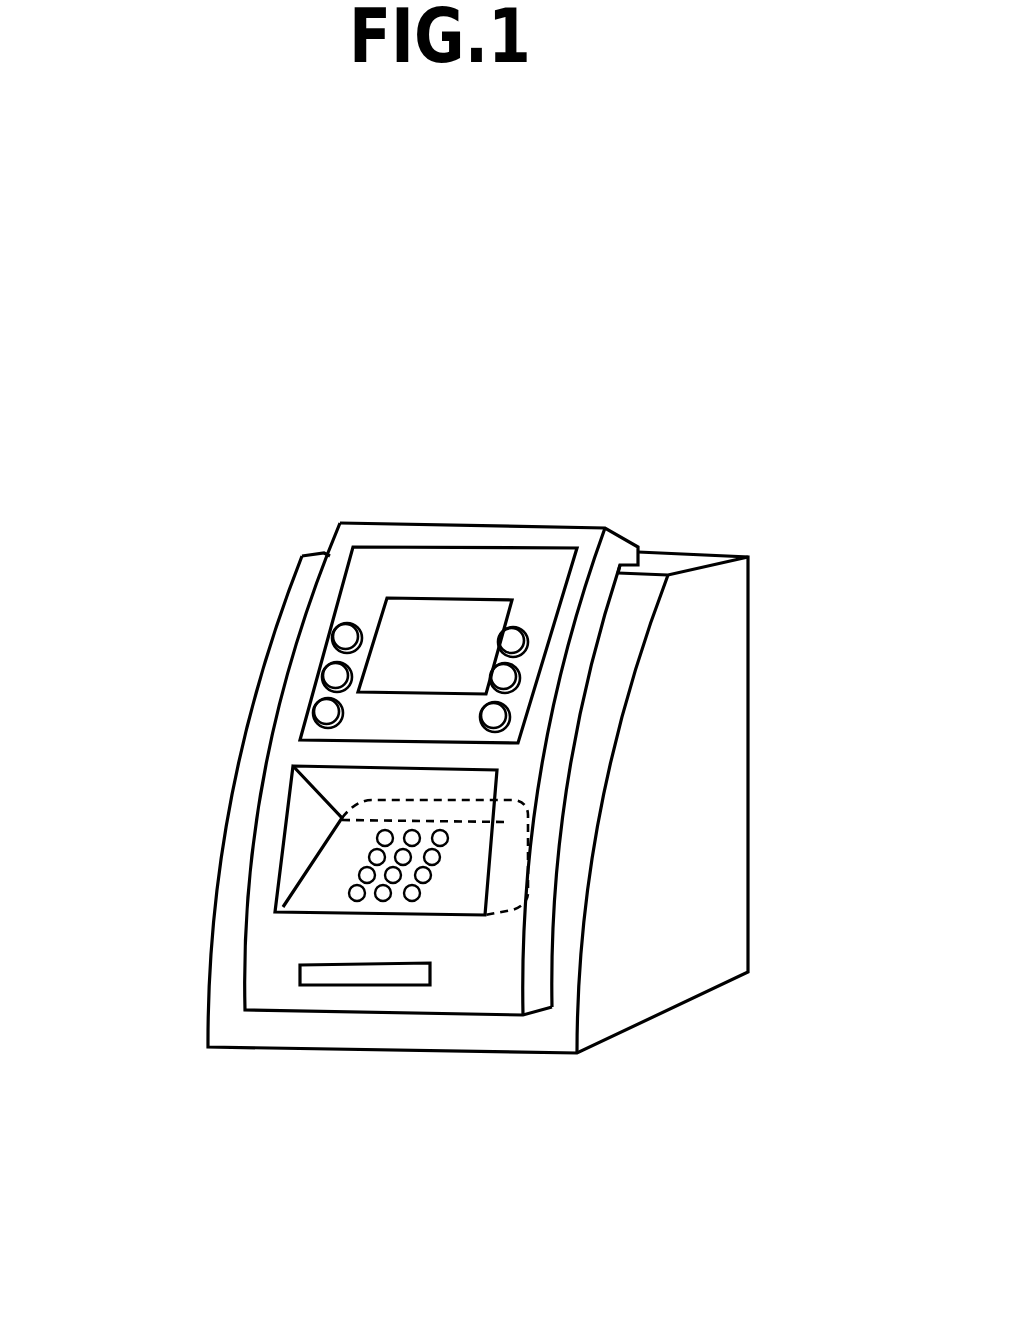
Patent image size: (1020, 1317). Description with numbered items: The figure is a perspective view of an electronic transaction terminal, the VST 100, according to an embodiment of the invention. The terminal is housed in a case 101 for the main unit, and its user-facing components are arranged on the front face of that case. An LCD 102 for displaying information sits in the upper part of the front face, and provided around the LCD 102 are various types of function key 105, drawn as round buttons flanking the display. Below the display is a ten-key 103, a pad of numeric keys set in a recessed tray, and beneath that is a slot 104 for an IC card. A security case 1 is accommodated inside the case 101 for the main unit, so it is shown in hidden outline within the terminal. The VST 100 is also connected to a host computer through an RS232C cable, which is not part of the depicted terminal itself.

The VST 100 is at (598, 436).
The case for the main unit 101 is at (736, 632).
The LCD 102 is at (457, 620).
The ten-key 103 is at (312, 883).
The slot 104 is at (348, 977).
The function key 105 is at (323, 672).
The security case 1 is at (507, 868).